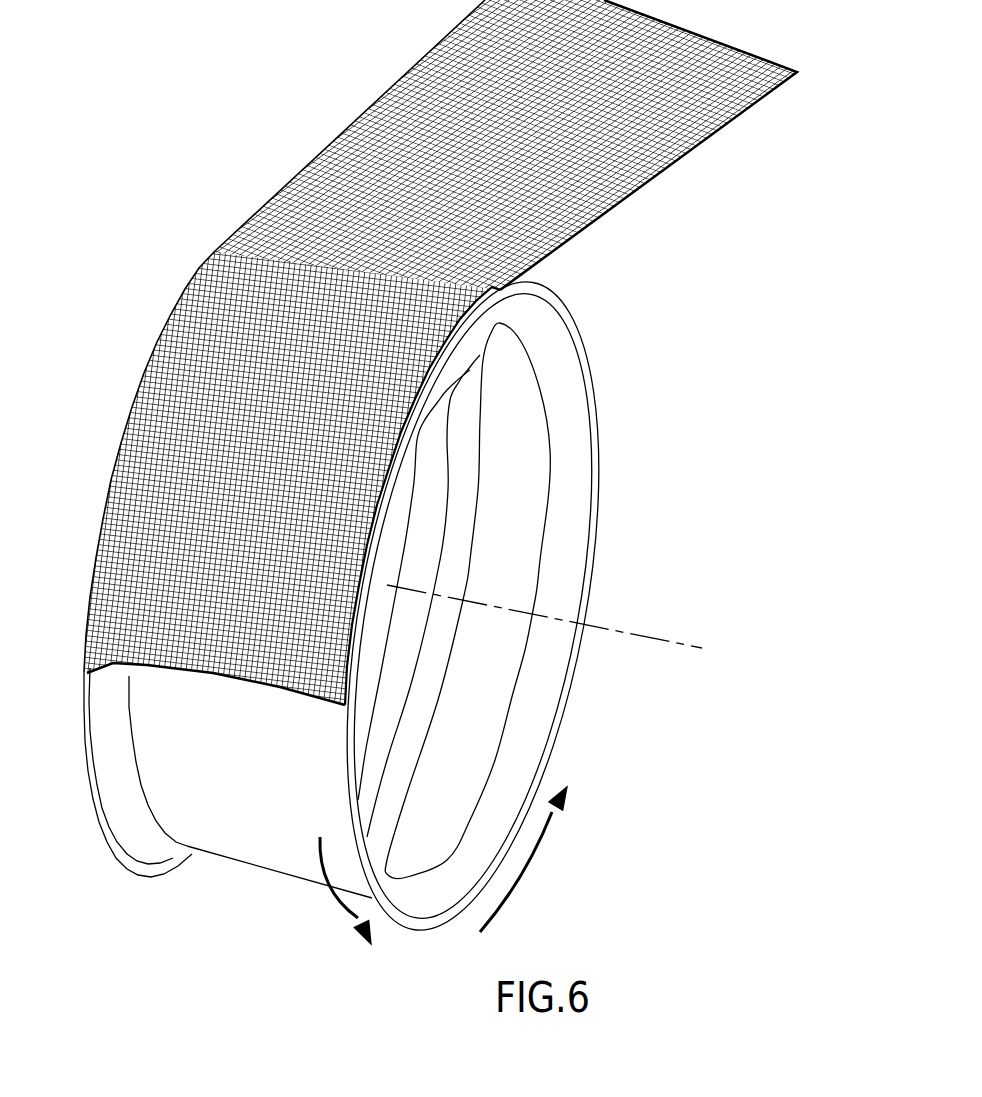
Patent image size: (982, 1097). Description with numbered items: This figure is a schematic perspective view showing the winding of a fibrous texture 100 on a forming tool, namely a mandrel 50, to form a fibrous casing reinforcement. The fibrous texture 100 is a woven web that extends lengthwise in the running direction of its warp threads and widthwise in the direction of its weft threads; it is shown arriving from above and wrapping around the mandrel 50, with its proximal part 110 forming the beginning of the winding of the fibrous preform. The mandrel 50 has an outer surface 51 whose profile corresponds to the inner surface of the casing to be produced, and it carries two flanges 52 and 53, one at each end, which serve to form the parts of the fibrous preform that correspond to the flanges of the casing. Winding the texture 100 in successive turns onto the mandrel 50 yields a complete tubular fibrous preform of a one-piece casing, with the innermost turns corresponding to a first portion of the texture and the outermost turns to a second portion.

The fibrous texture 100 is at (440, 378).
The proximal part 110 is at (247, 692).
The mandrel 50 is at (387, 617).
The outer surface 51 is at (215, 827).
The flange 52 is at (423, 925).
The flange 53 is at (160, 870).